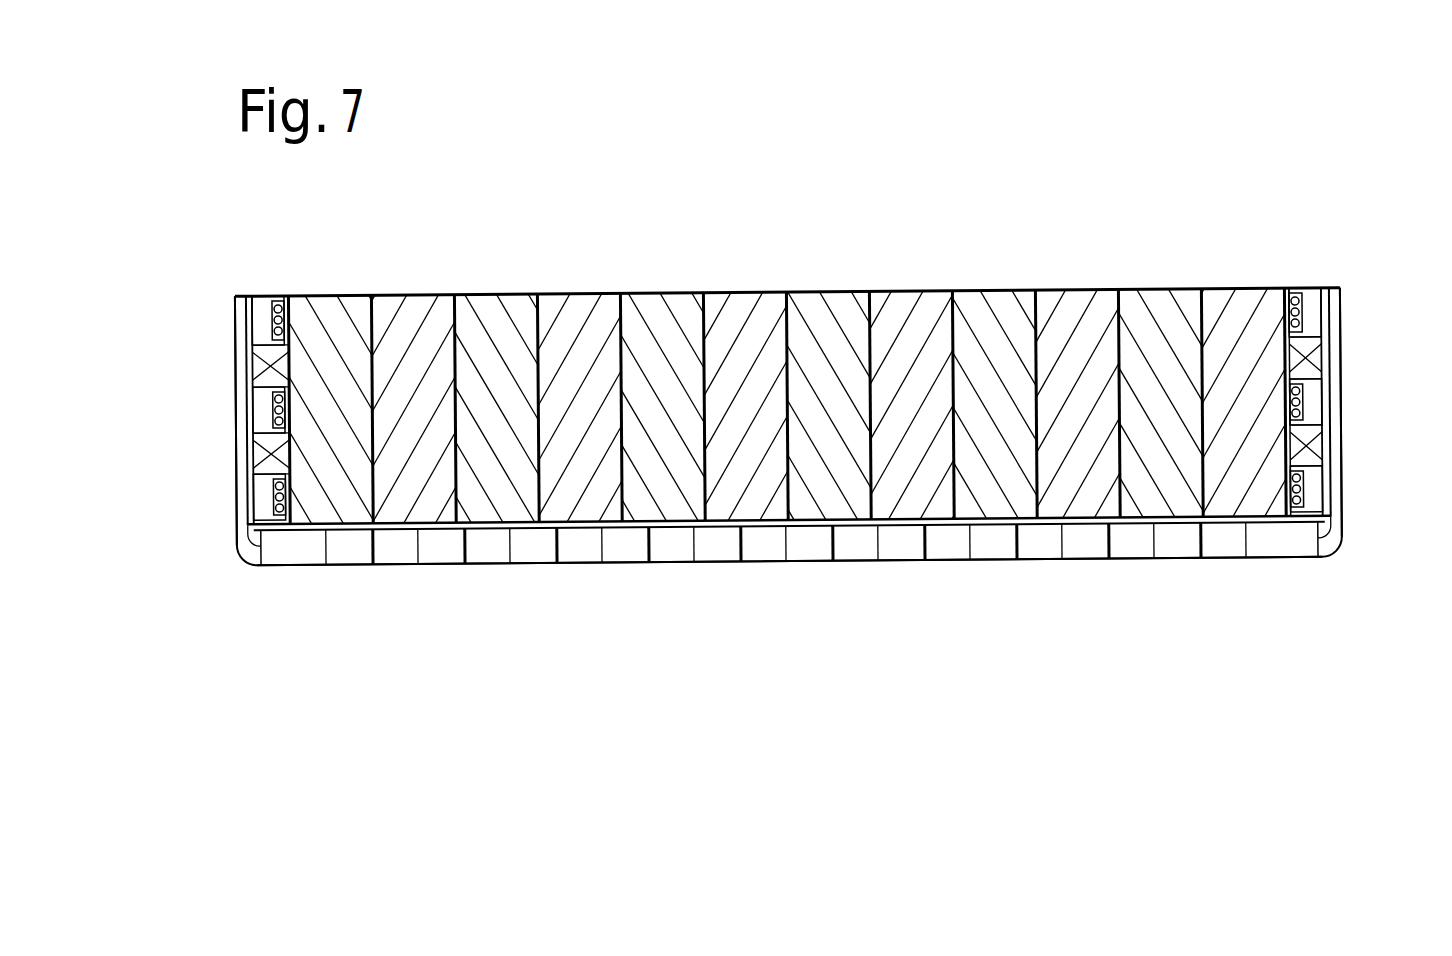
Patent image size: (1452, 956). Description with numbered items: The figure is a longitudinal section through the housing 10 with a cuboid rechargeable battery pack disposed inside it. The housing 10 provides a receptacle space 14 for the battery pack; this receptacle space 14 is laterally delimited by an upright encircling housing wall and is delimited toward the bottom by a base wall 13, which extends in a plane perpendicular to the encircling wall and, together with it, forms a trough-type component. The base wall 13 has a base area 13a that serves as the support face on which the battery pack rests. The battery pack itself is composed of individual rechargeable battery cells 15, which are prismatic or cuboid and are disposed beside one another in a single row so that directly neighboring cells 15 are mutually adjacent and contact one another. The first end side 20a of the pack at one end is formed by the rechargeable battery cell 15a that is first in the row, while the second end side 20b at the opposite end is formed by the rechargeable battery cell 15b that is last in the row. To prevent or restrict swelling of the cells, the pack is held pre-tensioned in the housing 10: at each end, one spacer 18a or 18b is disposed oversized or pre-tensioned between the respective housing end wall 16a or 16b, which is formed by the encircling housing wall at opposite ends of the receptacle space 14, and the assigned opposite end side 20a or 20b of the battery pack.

The housing 10 is at (770, 227).
The base wall 13 is at (789, 572).
The base area 13a is at (851, 517).
The receptacle space 14 is at (704, 478).
The rechargeable battery cell 15 is at (665, 495).
The first rechargeable battery cell in the row 15a is at (337, 493).
The last rechargeable battery cell in the row 15b is at (1240, 485).
The first housing end wall 16a is at (240, 507).
The second housing end wall 16b is at (1340, 472).
The first spacer 18a is at (240, 457).
The second spacer 18b is at (1310, 452).
The first end side of the rechargeable battery pack 20a is at (238, 363).
The second end side of the rechargeable battery pack 20b is at (1290, 362).